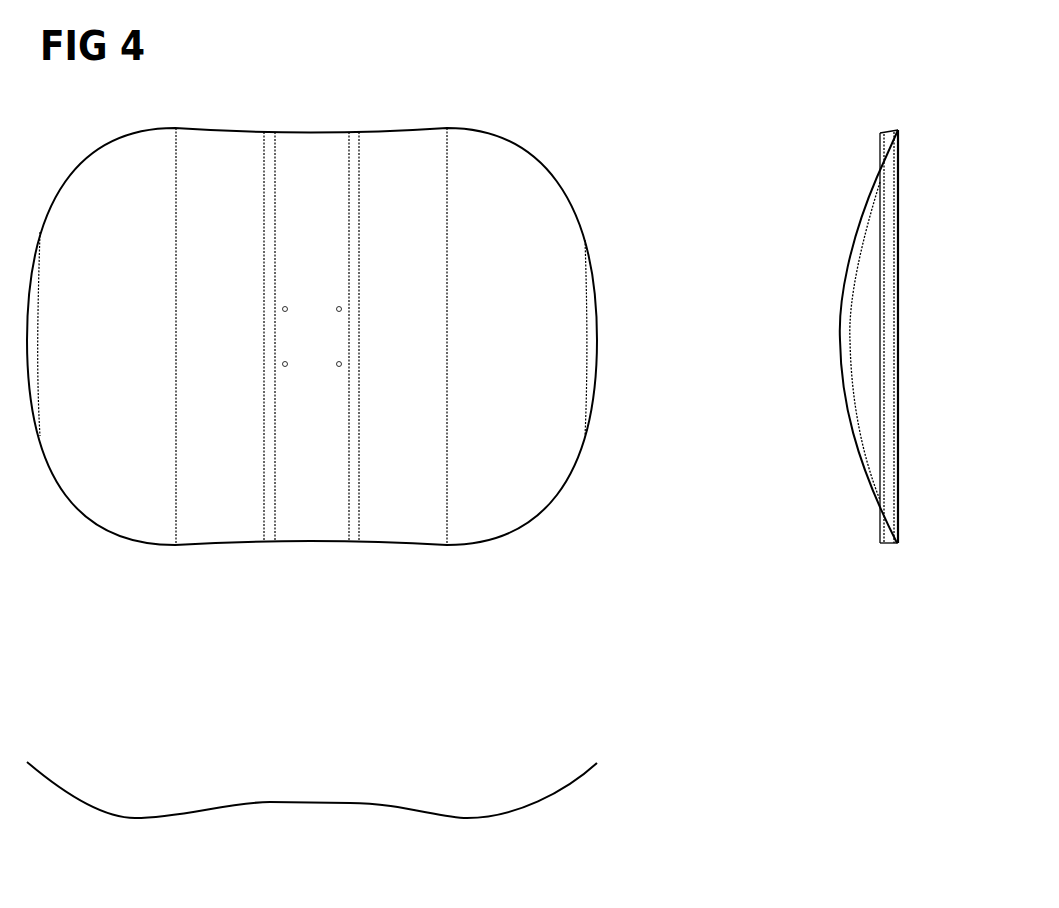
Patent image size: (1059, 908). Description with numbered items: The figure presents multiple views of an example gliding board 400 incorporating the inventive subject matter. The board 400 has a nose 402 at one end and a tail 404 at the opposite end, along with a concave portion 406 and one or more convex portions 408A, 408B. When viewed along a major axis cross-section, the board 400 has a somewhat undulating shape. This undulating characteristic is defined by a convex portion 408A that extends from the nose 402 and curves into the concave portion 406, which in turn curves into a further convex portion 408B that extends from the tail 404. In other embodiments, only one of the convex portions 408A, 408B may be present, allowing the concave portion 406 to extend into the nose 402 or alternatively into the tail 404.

The board 400 is at (370, 80).
The nose 402 is at (36, 468).
The tail 404 is at (613, 325).
The concave portion 406 is at (325, 797).
The convex portion 408A is at (150, 830).
The convex portion 408B is at (481, 829).